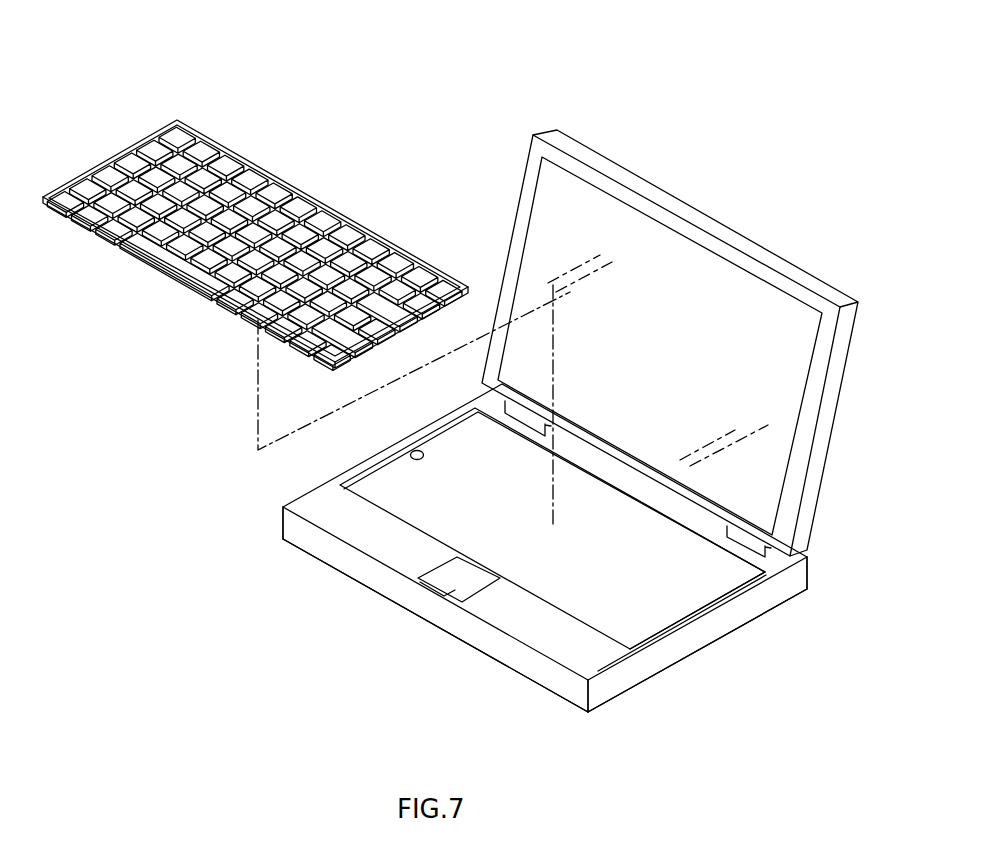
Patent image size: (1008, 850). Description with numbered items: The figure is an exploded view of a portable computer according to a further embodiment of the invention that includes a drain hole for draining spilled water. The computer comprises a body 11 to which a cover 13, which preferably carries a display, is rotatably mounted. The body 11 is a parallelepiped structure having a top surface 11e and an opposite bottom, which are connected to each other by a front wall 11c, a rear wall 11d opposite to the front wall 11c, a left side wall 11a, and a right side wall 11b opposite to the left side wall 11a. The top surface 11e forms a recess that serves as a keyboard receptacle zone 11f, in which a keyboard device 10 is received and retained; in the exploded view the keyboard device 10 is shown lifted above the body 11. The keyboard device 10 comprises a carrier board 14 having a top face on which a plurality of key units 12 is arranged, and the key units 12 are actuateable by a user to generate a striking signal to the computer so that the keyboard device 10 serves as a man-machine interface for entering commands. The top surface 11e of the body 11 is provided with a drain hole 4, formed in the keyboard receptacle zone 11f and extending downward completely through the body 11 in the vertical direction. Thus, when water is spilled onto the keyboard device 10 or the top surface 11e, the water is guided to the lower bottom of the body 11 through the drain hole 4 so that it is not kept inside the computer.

The keyboard device 10 is at (165, 92).
The key units 12 is at (140, 152).
The carrier board 14 is at (118, 248).
The cover 13 is at (750, 243).
The drain hole 4 is at (417, 451).
The body 11 is at (497, 652).
The left side wall 11a is at (283, 522).
The right side wall 11b is at (618, 682).
The front wall 11c is at (405, 598).
The rear wall 11d is at (810, 572).
The top surface 11e is at (590, 660).
The keyboard receptacle zone 11f is at (678, 605).